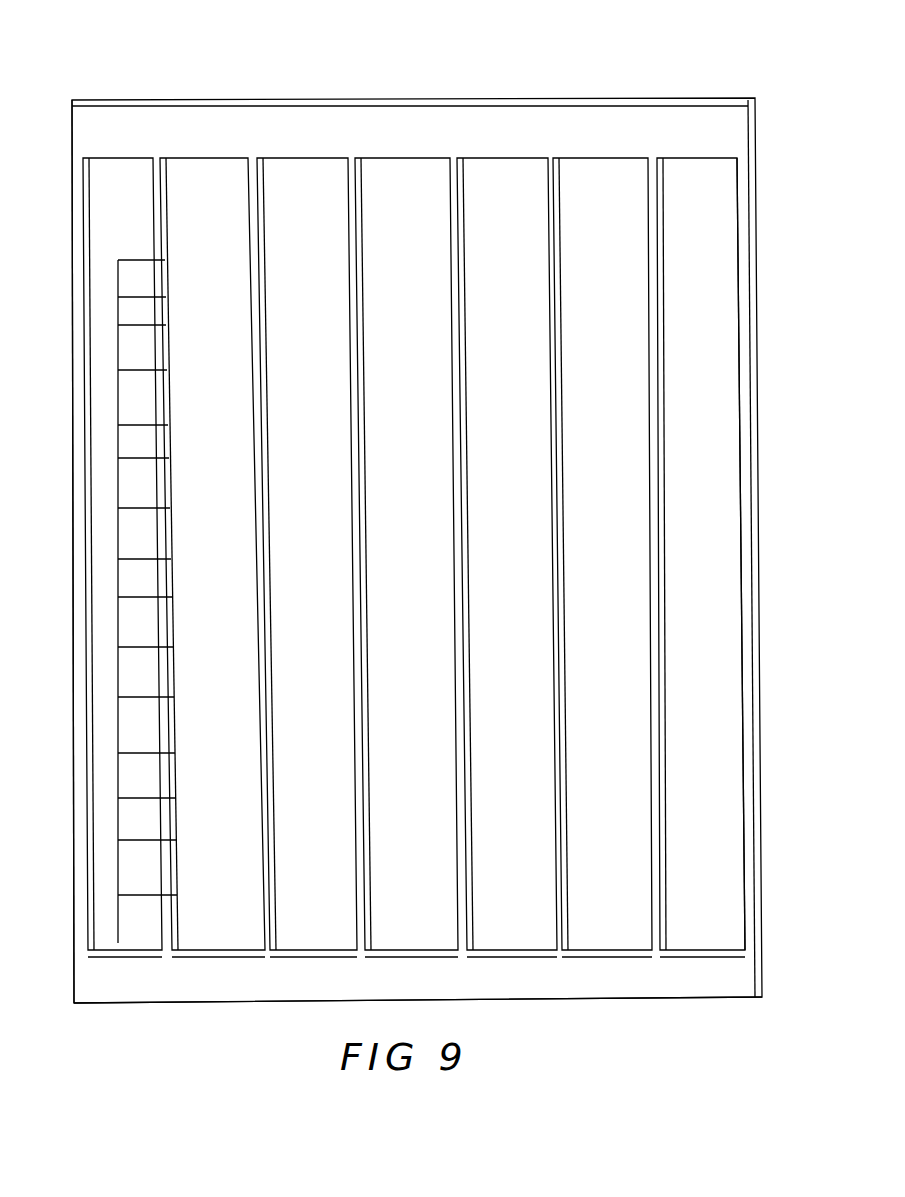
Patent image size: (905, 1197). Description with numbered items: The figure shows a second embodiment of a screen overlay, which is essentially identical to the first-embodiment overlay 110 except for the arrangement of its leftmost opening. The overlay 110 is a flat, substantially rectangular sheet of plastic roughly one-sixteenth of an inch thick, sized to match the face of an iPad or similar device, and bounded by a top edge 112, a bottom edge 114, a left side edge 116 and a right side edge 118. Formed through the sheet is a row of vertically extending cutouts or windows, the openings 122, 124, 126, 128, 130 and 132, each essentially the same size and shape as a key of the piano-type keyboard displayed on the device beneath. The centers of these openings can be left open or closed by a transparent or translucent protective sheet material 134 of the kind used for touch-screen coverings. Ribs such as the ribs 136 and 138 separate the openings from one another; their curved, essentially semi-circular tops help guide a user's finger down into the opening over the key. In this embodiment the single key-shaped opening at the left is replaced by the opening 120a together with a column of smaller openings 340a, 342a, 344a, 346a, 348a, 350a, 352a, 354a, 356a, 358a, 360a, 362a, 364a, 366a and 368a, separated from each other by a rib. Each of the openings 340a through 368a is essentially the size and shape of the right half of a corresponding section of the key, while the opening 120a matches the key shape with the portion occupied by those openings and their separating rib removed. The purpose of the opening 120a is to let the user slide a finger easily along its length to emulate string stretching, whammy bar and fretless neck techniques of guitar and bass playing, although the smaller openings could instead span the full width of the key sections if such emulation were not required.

The overlay 110 is at (148, 61).
The top edge 112 is at (535, 108).
The bottom edge 114 is at (668, 977).
The left side edge 116 is at (72, 600).
The right side edge 118 is at (748, 582).
The opening 120a is at (122, 554).
The opening 122 is at (212, 230).
The opening 124 is at (316, 240).
The opening 126 is at (415, 232).
The opening 128 is at (522, 231).
The opening 130 is at (612, 235).
The opening 132 is at (708, 218).
The transparent or translucent sheet material 134 is at (708, 290).
The rib 136 is at (170, 946).
The rib 138 is at (268, 946).
The opening 340a is at (173, 909).
The opening 342a is at (173, 860).
The opening 344a is at (173, 815).
The opening 346a is at (173, 771).
The opening 348a is at (173, 717).
The opening 350a is at (173, 665).
The opening 352a is at (173, 618).
The opening 354a is at (173, 575).
The opening 356a is at (173, 529).
The opening 358a is at (173, 477).
The opening 360a is at (173, 438).
The opening 362a is at (173, 392).
The opening 364a is at (173, 343).
The opening 366a is at (173, 312).
The opening 368a is at (173, 276).